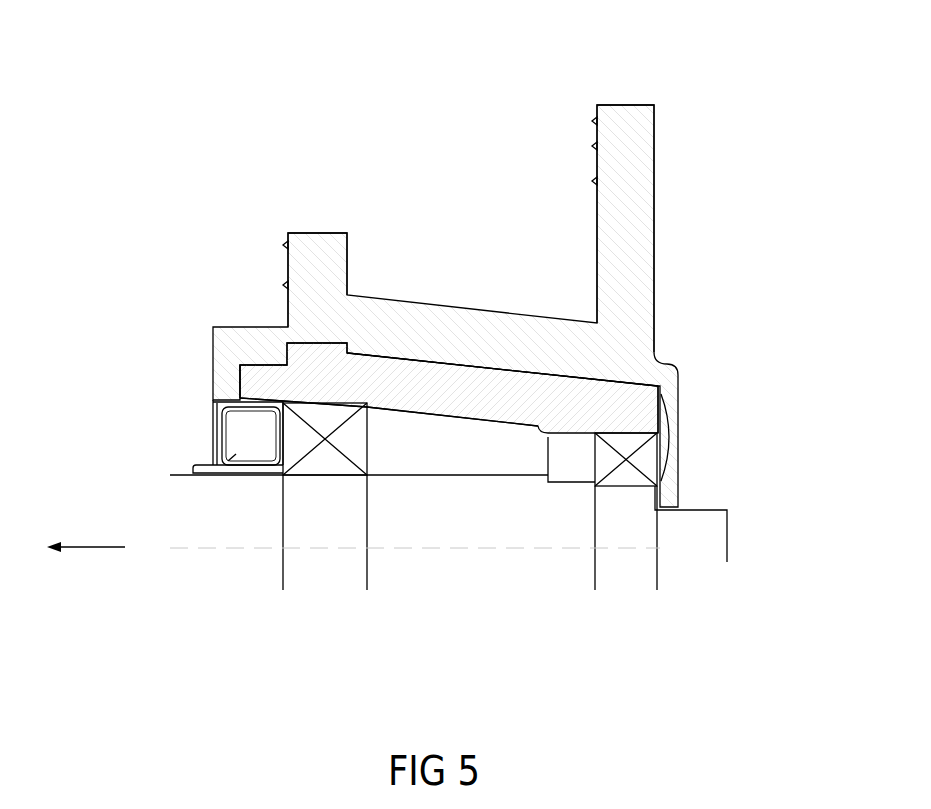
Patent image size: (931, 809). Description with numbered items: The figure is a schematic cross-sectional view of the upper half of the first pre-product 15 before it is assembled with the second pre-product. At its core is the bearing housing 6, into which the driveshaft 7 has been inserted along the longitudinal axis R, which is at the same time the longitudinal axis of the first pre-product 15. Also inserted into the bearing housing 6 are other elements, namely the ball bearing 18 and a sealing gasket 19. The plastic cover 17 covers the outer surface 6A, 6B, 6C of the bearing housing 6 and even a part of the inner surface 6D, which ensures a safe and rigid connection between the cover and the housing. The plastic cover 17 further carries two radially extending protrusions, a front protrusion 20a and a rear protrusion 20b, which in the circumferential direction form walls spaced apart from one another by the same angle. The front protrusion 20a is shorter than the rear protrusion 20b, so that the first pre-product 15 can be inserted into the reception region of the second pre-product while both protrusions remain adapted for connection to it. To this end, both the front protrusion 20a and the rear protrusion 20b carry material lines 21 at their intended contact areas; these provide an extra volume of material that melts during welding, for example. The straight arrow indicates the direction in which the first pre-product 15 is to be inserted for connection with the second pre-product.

The first pre-product 15 is at (262, 88).
The plastic cover 17 is at (400, 296).
The front protrusion 20a is at (347, 233).
The rear protrusion 20b is at (656, 105).
The material lines 21 is at (283, 244).
The bearing housing 6 is at (654, 382).
The outer surface of the bearing housing 6A is at (515, 370).
The outer surface of the bearing housing 6B is at (240, 381).
The outer surface of the bearing housing 6C is at (663, 403).
The inner surface of the bearing housing 6D is at (260, 400).
The ball bearing 18 is at (330, 479).
The sealing gasket 19 is at (212, 432).
The driveshaft 7 is at (727, 549).
The longitudinal axis R is at (548, 553).